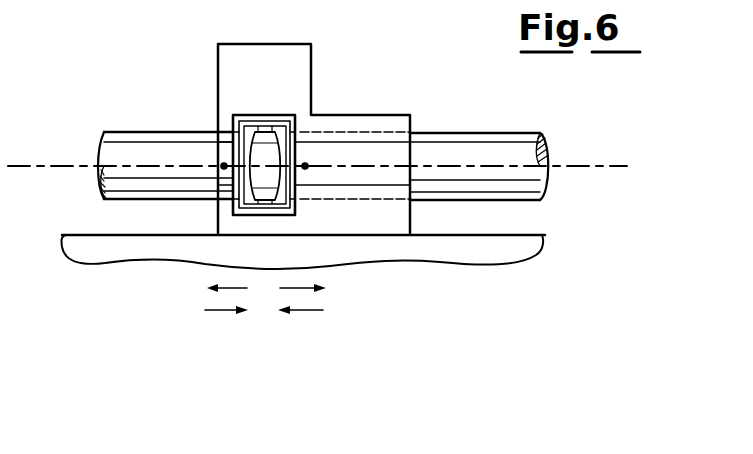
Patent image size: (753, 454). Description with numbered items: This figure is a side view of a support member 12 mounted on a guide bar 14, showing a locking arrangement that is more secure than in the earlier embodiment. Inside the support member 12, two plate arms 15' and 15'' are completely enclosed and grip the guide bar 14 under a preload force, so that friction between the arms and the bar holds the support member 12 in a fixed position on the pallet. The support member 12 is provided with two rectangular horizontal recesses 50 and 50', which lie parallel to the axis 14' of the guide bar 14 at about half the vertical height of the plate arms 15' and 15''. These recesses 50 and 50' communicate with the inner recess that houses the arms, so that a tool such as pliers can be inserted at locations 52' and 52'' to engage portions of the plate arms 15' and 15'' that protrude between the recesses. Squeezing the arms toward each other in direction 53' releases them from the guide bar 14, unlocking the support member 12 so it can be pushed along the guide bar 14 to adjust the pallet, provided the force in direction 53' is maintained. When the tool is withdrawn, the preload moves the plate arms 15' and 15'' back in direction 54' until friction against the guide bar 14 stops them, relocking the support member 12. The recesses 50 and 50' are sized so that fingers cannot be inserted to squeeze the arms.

The support member 12 is at (392, 215).
The guide bar 14 is at (328, 147).
The axis 14' is at (333, 140).
The plate arm 15' is at (236, 137).
The plate arm 15'' is at (302, 132).
The rectangular horizontal recess 50 is at (197, 181).
The rectangular horizontal recess 50' is at (422, 132).
The location 52' is at (192, 132).
The location 52'' is at (354, 125).
The direction 53' is at (262, 329).
The direction 54' is at (273, 292).